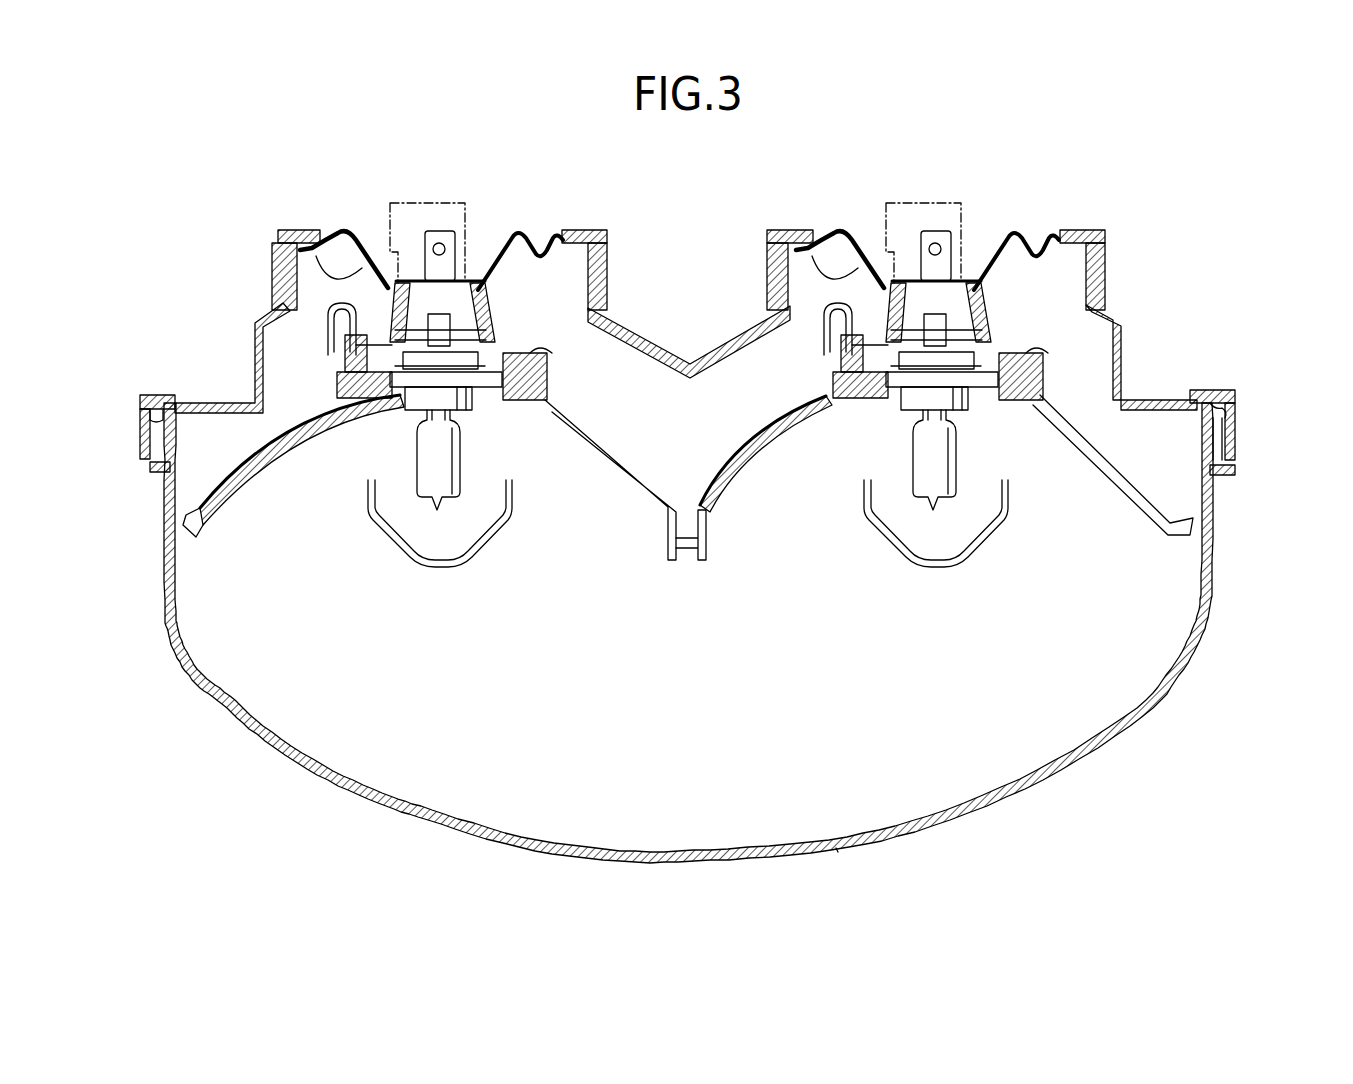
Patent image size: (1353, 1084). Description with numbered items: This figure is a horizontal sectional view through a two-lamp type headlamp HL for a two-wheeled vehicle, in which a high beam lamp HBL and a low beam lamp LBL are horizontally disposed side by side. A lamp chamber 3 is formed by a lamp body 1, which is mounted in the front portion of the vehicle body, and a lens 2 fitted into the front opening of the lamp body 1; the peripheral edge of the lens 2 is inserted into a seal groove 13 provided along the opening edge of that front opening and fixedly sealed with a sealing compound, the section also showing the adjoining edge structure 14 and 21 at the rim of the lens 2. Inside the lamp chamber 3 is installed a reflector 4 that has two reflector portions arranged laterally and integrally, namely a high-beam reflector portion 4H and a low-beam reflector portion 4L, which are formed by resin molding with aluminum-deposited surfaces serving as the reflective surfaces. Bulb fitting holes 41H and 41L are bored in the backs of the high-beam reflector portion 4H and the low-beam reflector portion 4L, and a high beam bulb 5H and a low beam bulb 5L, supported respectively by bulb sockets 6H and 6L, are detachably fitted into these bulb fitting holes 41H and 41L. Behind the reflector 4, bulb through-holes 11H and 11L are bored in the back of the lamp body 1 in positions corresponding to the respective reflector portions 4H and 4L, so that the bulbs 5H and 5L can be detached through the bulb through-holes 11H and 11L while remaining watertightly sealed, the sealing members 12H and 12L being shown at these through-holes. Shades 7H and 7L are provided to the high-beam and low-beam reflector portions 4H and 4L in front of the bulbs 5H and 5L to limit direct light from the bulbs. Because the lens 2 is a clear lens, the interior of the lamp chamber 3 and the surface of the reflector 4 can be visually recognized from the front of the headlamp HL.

The lamp body 1 is at (640, 345).
The lens 2 is at (560, 856).
The lamp chamber 3 is at (838, 806).
The reflector 4 is at (1205, 500).
The high-beam reflector portion 4H is at (260, 452).
The low-beam reflector portion 4L is at (1110, 450).
The high beam bulb 5H is at (447, 466).
The low beam bulb 5L is at (945, 466).
The bulb socket 6H is at (445, 328).
The bulb socket 6L is at (938, 328).
The shade 7H is at (480, 546).
The shade 7L is at (980, 546).
The bulb through-hole 11H is at (333, 242).
The bulb through-hole 11L is at (828, 245).
The high-beam boot seal lip 12H is at (532, 235).
The low-beam boot seal lip 12L is at (1038, 240).
The seal groove 13 is at (1215, 392).
The flange groove 14 is at (1232, 410).
The sealing member 21 is at (1222, 441).
The bulb fitting hole 41H is at (470, 393).
The bulb fitting hole 41L is at (968, 393).
The headlamp HL is at (1204, 186).
The high beam lamp HBL is at (280, 776).
The low beam lamp LBL is at (1090, 778).